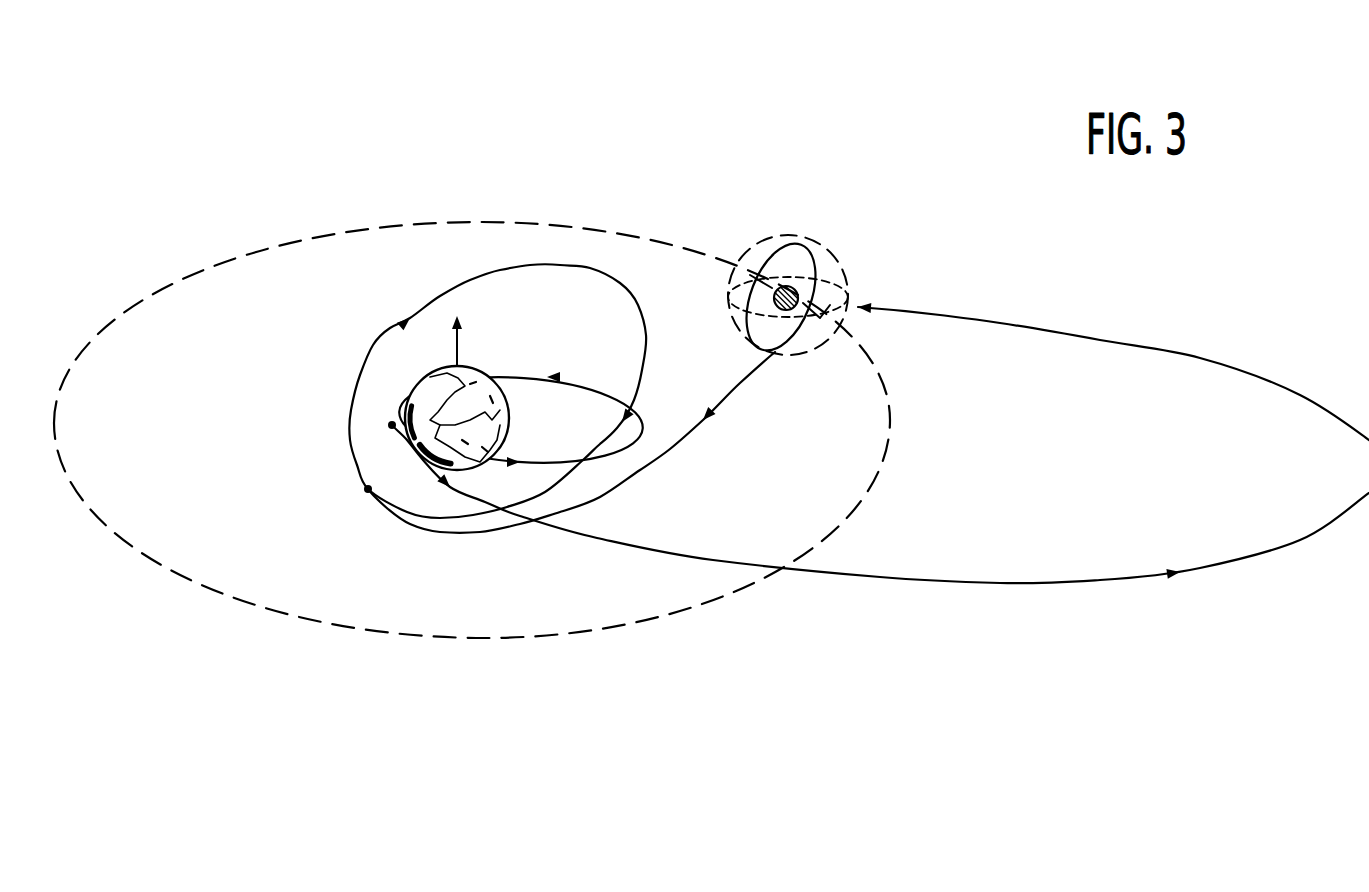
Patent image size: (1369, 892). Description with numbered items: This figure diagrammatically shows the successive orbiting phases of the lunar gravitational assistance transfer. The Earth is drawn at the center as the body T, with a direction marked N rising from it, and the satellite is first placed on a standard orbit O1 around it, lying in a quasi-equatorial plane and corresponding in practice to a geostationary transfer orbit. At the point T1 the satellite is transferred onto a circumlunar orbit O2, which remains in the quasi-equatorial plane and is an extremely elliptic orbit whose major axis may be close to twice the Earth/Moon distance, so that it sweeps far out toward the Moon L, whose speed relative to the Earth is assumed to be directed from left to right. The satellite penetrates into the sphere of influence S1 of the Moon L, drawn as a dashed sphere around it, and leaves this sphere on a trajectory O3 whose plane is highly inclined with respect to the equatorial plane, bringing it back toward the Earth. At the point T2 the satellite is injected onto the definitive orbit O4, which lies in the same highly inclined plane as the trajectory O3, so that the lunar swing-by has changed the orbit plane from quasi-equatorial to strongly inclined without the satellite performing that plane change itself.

The standard orbit O1 is at (583, 378).
The circumlunar orbit O2 is at (880, 576).
The trajectory O3 is at (683, 437).
The definitive orbit O4 is at (418, 314).
The earth T is at (508, 408).
The transfer point T1 is at (392, 425).
The injection point T2 is at (368, 489).
The north axis of the earth N is at (467, 338).
The sphere of influence S1 is at (774, 240).
The Moon L is at (798, 289).